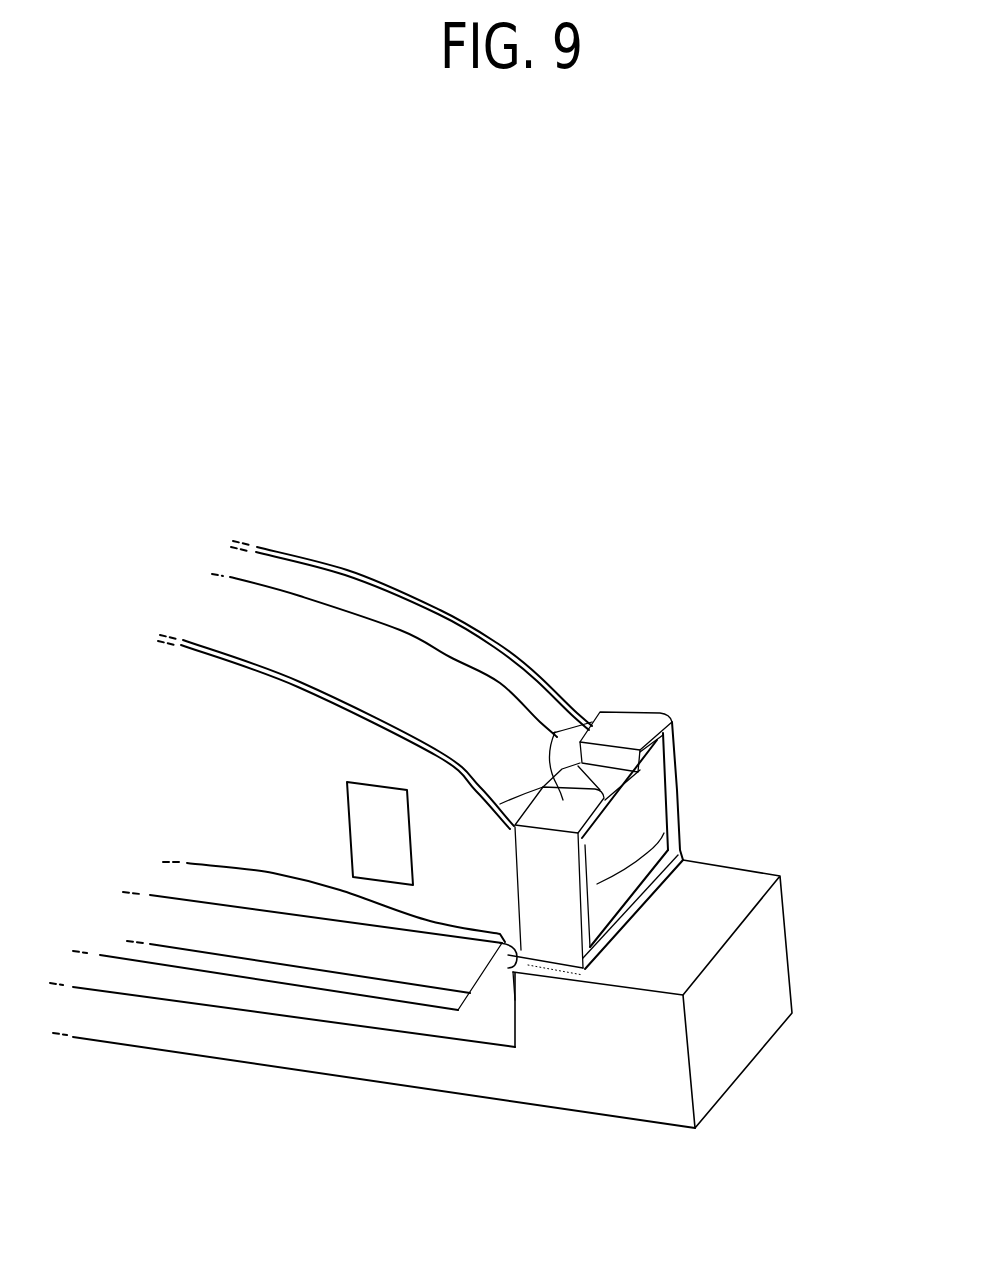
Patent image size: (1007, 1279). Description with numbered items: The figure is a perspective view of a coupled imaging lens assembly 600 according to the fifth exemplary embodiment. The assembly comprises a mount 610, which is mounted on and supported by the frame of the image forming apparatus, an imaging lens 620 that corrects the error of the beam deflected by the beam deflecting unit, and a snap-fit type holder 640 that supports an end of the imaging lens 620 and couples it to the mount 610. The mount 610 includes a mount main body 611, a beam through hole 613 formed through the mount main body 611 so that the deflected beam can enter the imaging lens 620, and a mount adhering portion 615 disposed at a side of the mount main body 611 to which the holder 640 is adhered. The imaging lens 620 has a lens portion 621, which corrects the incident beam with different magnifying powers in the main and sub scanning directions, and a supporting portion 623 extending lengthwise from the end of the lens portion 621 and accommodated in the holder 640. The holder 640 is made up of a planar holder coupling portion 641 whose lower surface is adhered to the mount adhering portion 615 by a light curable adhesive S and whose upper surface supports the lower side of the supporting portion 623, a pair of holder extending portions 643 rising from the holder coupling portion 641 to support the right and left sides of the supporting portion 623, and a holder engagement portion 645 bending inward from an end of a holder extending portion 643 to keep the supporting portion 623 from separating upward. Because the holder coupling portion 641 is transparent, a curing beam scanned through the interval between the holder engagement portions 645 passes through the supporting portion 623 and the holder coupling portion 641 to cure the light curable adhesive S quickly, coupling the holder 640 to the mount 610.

The imaging lens assembly 600 is at (752, 492).
The mount 610 is at (792, 1086).
The mount main body 611 is at (367, 1057).
The beam through hole 613 is at (233, 963).
The mount adhering portion 615 is at (663, 978).
The imaging lens 620 is at (482, 584).
The lens portion 621 is at (266, 742).
The supporting portion 623 is at (653, 818).
The holder 640 is at (684, 690).
The holder coupling portion 641 is at (650, 882).
The holder extending portion 643 is at (668, 815).
The holder engagement portion 645 is at (622, 718).
The light curable adhesive S is at (552, 975).